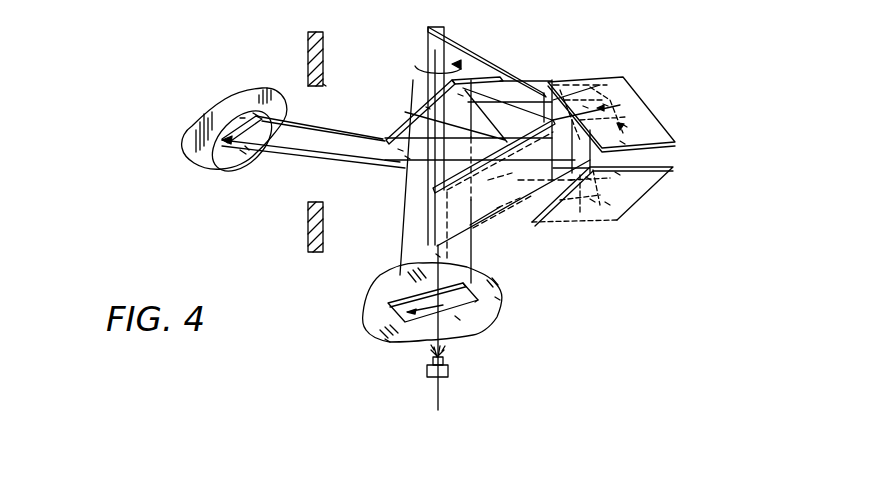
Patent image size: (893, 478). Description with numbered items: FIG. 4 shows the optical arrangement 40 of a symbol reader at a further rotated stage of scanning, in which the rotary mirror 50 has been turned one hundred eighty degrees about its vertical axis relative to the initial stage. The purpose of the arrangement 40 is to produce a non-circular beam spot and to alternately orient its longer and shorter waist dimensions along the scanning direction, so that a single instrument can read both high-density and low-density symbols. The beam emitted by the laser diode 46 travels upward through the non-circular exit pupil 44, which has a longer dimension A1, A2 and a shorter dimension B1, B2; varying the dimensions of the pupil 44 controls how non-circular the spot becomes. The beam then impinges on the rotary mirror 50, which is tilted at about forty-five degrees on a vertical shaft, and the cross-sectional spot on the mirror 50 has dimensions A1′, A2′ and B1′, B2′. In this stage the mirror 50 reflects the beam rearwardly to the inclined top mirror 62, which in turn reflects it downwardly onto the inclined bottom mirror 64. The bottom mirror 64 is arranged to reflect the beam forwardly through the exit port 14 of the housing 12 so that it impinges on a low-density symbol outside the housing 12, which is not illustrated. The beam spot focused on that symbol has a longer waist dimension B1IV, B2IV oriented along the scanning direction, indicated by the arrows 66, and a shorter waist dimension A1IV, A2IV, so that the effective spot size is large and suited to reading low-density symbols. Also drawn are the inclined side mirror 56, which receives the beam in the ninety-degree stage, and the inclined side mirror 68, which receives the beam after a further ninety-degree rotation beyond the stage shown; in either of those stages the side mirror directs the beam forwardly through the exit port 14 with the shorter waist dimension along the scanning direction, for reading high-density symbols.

The housing 12 is at (323, 45).
The exit port 14 is at (326, 86).
The optical arrangement 40 is at (535, 38).
The exit pupil 44 is at (503, 327).
The laser diode 46 is at (448, 372).
The rotary mirror 50 is at (386, 139).
The inclined side mirror 56 is at (486, 213).
The inclined top mirror 62 is at (625, 95).
The inclined bottom mirror 64 is at (625, 212).
The arrows 66 is at (190, 154).
The inclined side mirror 68 is at (514, 91).
The longer dimension endpoint A1 is at (387, 340).
The longer dimension endpoint A2 is at (497, 298).
The shorter dimension endpoint B1 is at (457, 318).
The shorter dimension endpoint B2 is at (437, 255).
The beam spot dimension endpoint on rotary mirror A1′ is at (400, 150).
The beam spot dimension endpoint on rotary mirror A2′ is at (460, 95).
The beam spot dimension endpoint on rotary mirror B1′ is at (428, 108).
The beam spot dimension endpoint on rotary mirror B2′ is at (407, 157).
The shorter waist dimension endpoint at symbol A1IV is at (242, 118).
The shorter waist dimension endpoint at symbol A2IV is at (243, 152).
The longer waist dimension endpoint at symbol B1IV is at (247, 148).
The longer waist dimension endpoint at symbol B2IV is at (255, 114).